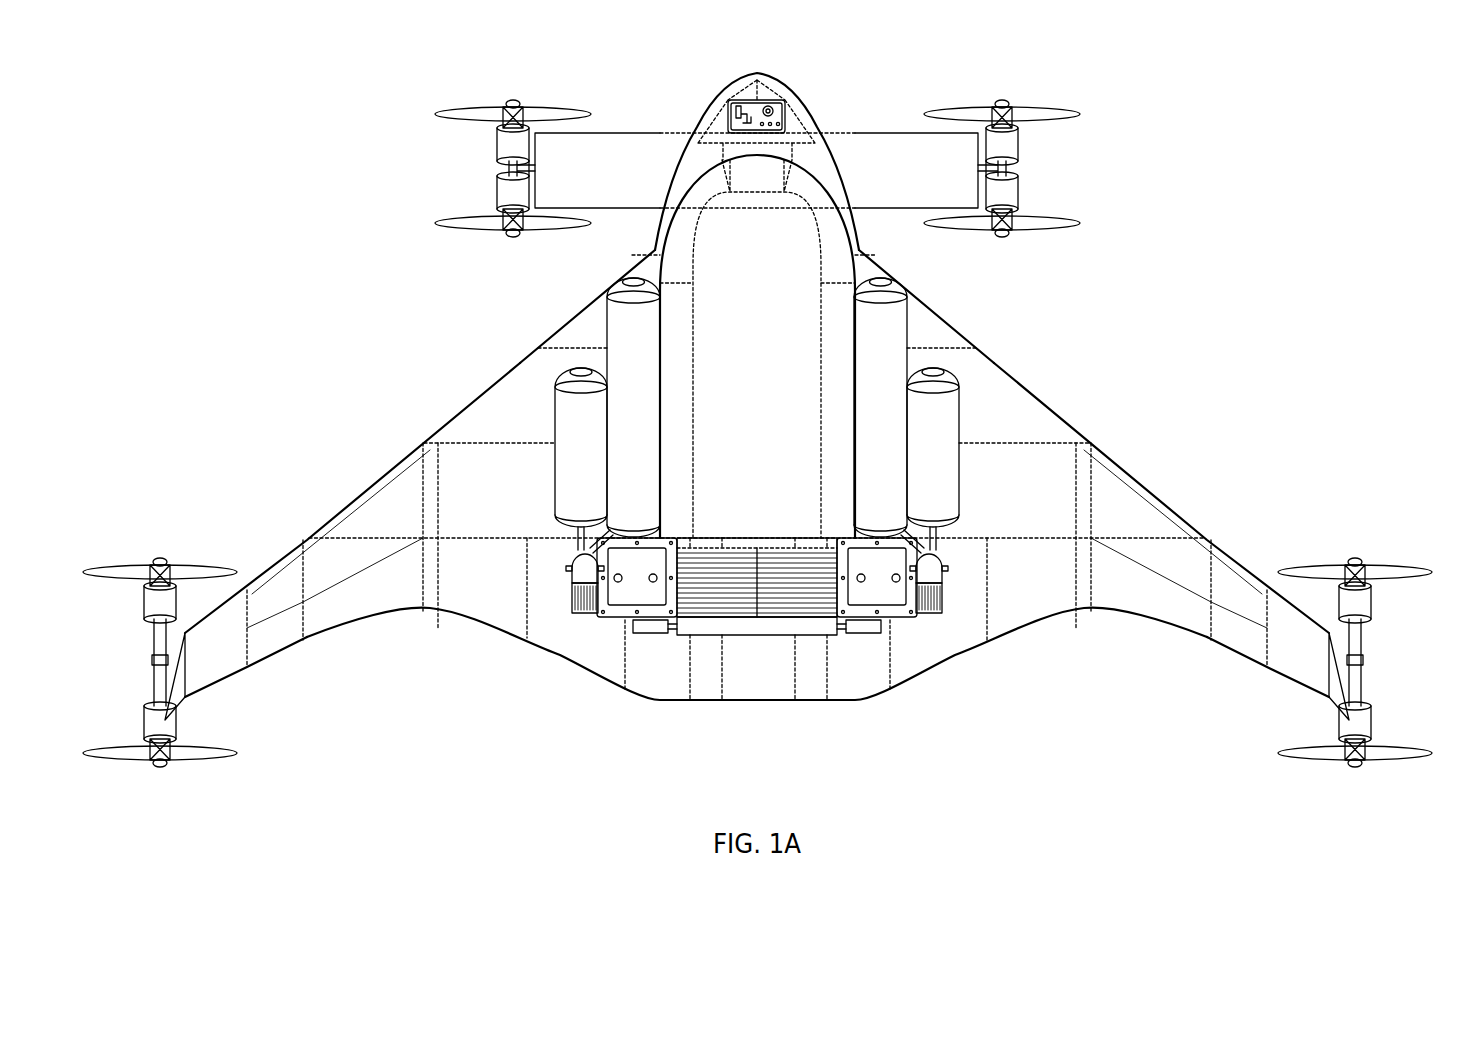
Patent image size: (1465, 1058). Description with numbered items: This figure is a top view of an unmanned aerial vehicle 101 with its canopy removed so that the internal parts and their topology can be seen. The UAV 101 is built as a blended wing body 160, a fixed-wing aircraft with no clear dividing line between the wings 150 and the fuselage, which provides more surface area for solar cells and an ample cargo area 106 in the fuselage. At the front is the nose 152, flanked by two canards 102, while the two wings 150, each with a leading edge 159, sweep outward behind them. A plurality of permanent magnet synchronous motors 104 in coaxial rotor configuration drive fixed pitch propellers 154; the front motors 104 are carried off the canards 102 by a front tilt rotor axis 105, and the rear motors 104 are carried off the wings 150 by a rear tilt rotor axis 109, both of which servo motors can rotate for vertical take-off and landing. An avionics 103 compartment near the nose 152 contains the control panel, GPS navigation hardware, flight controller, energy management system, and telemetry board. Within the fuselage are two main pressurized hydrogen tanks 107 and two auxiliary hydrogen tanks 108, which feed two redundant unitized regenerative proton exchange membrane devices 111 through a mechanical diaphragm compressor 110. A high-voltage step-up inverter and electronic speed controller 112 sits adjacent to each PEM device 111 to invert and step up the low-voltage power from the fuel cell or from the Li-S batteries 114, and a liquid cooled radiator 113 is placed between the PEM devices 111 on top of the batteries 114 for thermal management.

The unmanned aerial vehicle 101 is at (1195, 264).
The canard 102 is at (887, 133).
The avionics 103 is at (779, 100).
The permanent magnet synchronous motor 104 is at (497, 142).
The front tilt rotor axis 105 is at (509, 179).
The cargo area 106 is at (692, 276).
The main pressurized hydrogen tank 107 is at (605, 344).
The auxiliary hydrogen tank 108 is at (555, 396).
The rear tilt rotor axis 109 is at (158, 661).
The mechanical diaphragm compressor 110 is at (585, 612).
The unitized regenerative proton exchange membrane device 111 is at (622, 620).
The high-voltage step-up inverter and electronic speed controller 112 is at (664, 635).
The liquid cooled radiator 113 is at (722, 589).
The Li-S battery 114 is at (758, 635).
The wing 150 is at (417, 553).
The nose 152 is at (754, 74).
The fixed pitch propeller 154 is at (540, 110).
The leading edge 159 is at (425, 450).
The blended wing body 160 is at (988, 405).